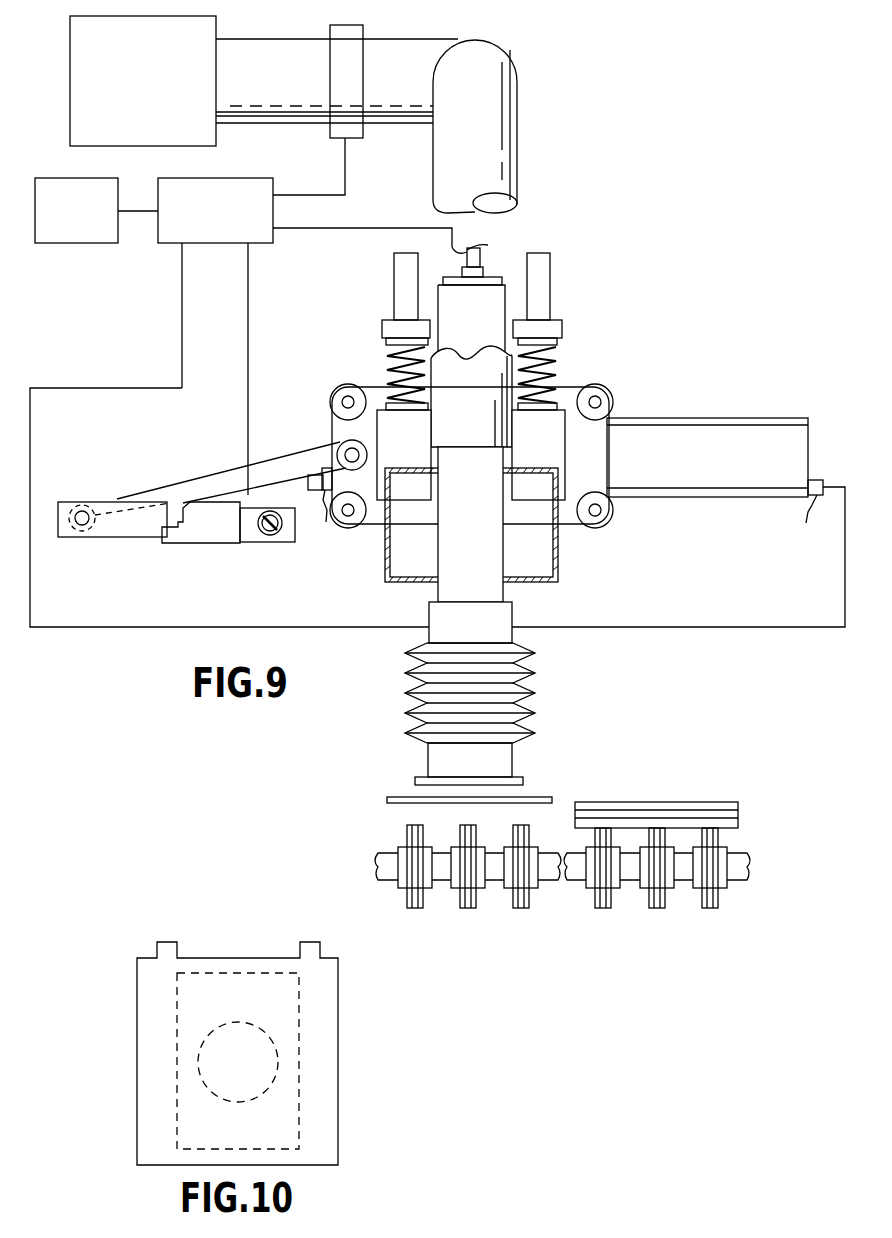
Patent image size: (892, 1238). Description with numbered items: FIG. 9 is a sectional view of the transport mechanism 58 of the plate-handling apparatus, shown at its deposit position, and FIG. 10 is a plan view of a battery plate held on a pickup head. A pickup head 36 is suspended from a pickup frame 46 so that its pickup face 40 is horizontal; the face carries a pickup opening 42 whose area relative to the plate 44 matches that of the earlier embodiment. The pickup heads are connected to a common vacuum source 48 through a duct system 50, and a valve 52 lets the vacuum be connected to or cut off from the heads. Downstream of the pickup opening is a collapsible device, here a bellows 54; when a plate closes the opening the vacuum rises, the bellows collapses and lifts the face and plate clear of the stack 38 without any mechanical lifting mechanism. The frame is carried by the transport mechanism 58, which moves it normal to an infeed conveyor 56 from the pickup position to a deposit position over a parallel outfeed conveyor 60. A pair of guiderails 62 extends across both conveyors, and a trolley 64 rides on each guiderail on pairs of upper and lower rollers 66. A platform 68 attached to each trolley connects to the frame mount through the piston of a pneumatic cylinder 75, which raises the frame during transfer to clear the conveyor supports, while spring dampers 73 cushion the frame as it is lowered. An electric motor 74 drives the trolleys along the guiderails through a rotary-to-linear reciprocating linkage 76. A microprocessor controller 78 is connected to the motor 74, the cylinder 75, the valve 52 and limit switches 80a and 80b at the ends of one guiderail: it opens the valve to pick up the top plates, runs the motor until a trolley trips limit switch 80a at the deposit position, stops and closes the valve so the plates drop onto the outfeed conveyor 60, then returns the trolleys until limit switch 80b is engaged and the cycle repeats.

In FIG. 9, the pickup head 36 is at (512, 760).
In FIG. 9, the stack 38 is at (738, 810).
In FIG. 10, the pickup face 40 is at (193, 1022).
In FIG. 10, the pickup opening 42 is at (212, 1081).
In FIG. 9, the plate 44 is at (387, 800).
In FIG. 10, the plate 44 is at (137, 985).
In FIG. 9, the pickup frame 46 is at (544, 590).
In FIG. 9, the vacuum source 48 is at (157, 99).
In FIG. 9, the duct system 50 is at (302, 124).
In FIG. 9, the valve 52 is at (330, 84).
In FIG. 9, the bellows 54 is at (535, 690).
In FIG. 9, the infeed conveyor 56 is at (712, 908).
In FIG. 9, the transport mechanism 58 is at (632, 335).
In FIG. 9, the outfeed conveyor 60 is at (413, 908).
In FIG. 9, the guiderail 62 is at (705, 497).
In FIG. 9, the trolley 64 is at (595, 470).
In FIG. 9, the roller 66 is at (331, 389).
In FIG. 9, the platform 68 is at (558, 443).
In FIG. 9, the spring damper 73 is at (386, 355).
In FIG. 9, the electric motor 74 is at (90, 225).
In FIG. 9, the pneumatic cylinder 75 is at (484, 326).
In FIG. 9, the rotary-to-linear reciprocating linkage 76 is at (218, 476).
In FIG. 9, the microprocessor controller 78 is at (229, 225).
In FIG. 9, the limit switch 80a is at (325, 522).
In FIG. 9, the limit switch 80b is at (800, 514).